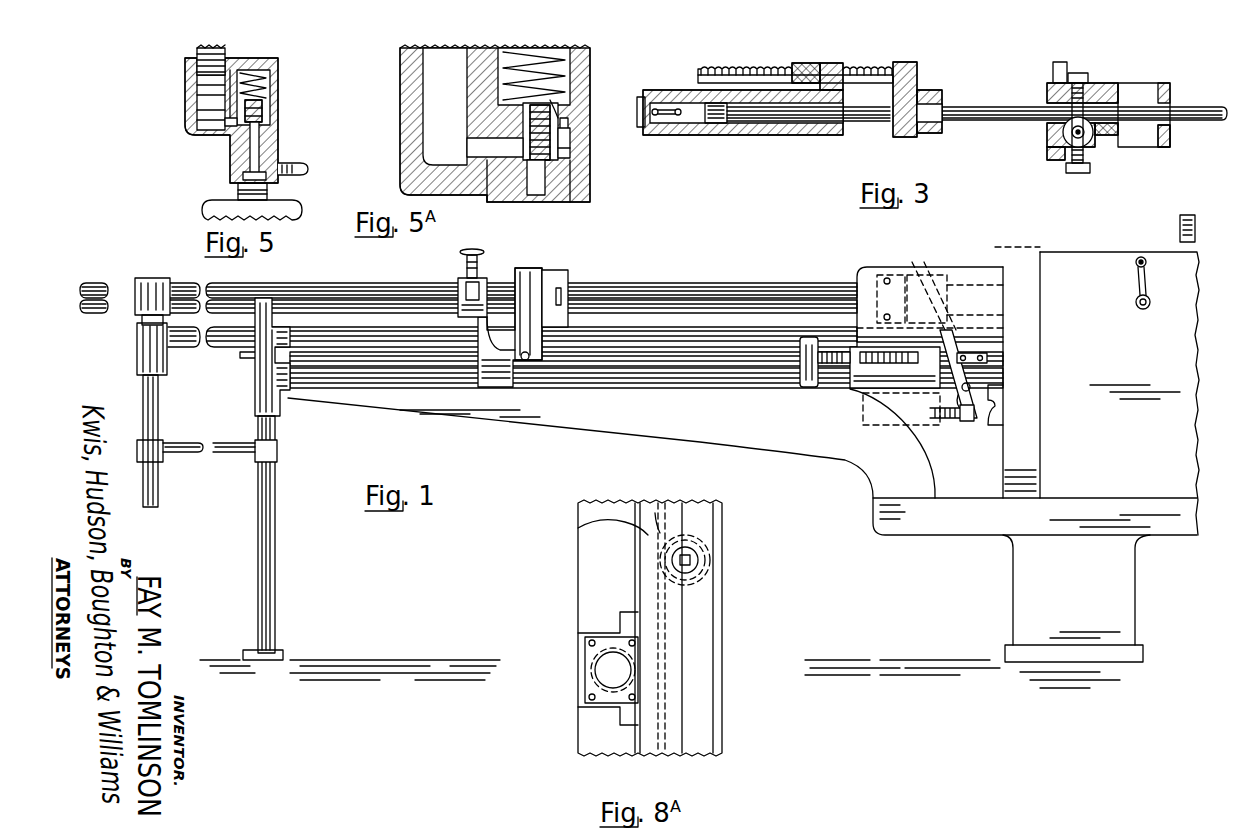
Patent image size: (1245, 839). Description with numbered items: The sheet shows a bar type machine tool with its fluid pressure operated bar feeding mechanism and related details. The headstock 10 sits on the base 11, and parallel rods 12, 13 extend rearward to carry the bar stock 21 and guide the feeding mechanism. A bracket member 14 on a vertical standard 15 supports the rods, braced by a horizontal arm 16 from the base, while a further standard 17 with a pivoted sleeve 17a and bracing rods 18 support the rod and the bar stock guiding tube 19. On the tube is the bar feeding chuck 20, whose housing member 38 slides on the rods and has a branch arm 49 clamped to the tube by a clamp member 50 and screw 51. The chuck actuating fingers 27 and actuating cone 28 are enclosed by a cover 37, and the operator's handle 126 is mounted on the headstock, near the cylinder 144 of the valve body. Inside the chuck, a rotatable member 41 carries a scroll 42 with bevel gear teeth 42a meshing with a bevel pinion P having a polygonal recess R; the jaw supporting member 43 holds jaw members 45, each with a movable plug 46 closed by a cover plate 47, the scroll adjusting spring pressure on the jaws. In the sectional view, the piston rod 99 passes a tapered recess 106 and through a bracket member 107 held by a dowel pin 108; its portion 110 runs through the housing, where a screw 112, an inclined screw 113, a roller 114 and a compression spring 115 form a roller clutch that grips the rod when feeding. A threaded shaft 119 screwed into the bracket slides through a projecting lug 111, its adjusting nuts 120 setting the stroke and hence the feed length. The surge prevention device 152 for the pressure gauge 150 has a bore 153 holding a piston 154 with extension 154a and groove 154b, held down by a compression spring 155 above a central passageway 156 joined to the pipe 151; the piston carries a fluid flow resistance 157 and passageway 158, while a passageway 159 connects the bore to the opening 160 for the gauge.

In FIG. 1, the headstock 10 is at (1197, 336).
In FIG. 1, the base 11 is at (1015, 598).
In FIG. 1, the rod 12 is at (636, 388).
In FIG. 1, the rod 13 is at (699, 336).
In FIG. 1, the bracket member 14 is at (274, 298).
In FIG. 1, the vertical standard 15 is at (276, 496).
In FIG. 1, the horizontal arm 16 is at (666, 435).
In FIG. 1, the vertical standard 17 is at (146, 416).
In FIG. 1, the pivoted sleeve 17a is at (160, 263).
In FIG. 1, the bracing rod 18 is at (237, 443).
In FIG. 1, the bar stock guiding tube 19 is at (418, 268).
In FIG. 1, the bar feeding chuck 20 is at (503, 272).
In FIG. 1, the bar stock 21 is at (752, 275).
In FIG. 1, the fingers 27 is at (905, 277).
In FIG. 1, the actuating cone 28 is at (935, 282).
In FIG. 1, the cover 37 is at (990, 268).
In FIG. 3, the housing member 38 is at (1118, 85).
In FIG. 1, the housing member 38 is at (566, 282).
In FIG. 1, the rotatable member 41 is at (545, 270).
In FIG. 8A, the scroll 42 is at (648, 518).
In FIG. 8A, the bevel gear teeth 42a is at (668, 638).
In FIG. 8A, the jaw supporting member 43 is at (580, 527).
In FIG. 8A, the jaw member 45 is at (586, 641).
In FIG. 8A, the movable plug 46 is at (612, 651).
In FIG. 8A, the cover plate 47 is at (590, 690).
In FIG. 1, the branch arm 49 is at (480, 328).
In FIG. 1, the clamp member 50 is at (469, 280).
In FIG. 1, the screw 51 is at (479, 254).
In FIG. 3, the piston rod 99 is at (873, 122).
In FIG. 1, the piston rod 99 is at (790, 360).
In FIG. 3, the tapered recess 106 is at (680, 118).
In FIG. 3, the bracket member 107 is at (915, 90).
In FIG. 3, the dowel pin 108 is at (932, 133).
In FIG. 3, the piston rod portion 110 is at (1012, 108).
In FIG. 3, the projecting lug 111 is at (856, 42).
In FIG. 3, the screw 112 is at (1084, 74).
In FIG. 3, the screw 113 is at (1076, 175).
In FIG. 3, the roller 114 is at (1090, 140).
In FIG. 3, the compression spring 115 is at (1120, 126).
In FIG. 3, the threaded shaft 119 is at (886, 68).
In FIG. 3, the adjusting nuts 120 is at (793, 62).
In FIG. 1, the handle 126 is at (1150, 284).
In FIG. 1, the cylinder 144 is at (1183, 228).
In FIG. 5, the pressure gauge 150 is at (212, 52).
In FIG. 5, the pipe 151 is at (285, 162).
In FIG. 5, the surge prevention device 152 is at (296, 98).
In FIG. 5, the bore 153 is at (236, 62).
In FIG. 5A, the bore 153 is at (572, 62).
In FIG. 5, the piston 154 is at (268, 112).
In FIG. 5A, the piston 154 is at (572, 130).
In FIG. 5, the extension 154a is at (266, 90).
In FIG. 5A, the extension 154a is at (522, 98).
In FIG. 5A, the groove 154b is at (570, 150).
In FIG. 5, the compression spring 155 is at (266, 70).
In FIG. 5A, the compression spring 155 is at (522, 37).
In FIG. 5, the central passageway 156 is at (243, 170).
In FIG. 5A, the central passageway 156 is at (534, 186).
In FIG. 5, the fluid flow resistance 157 is at (216, 140).
In FIG. 5A, the fluid flow resistance 157 is at (556, 102).
In FIG. 5A, the passageway 158 is at (566, 112).
In FIG. 5, the passageway 159 is at (228, 122).
In FIG. 5A, the passageway 159 is at (482, 146).
In FIG. 5, the opening 160 is at (200, 100).
In FIG. 5A, the opening 160 is at (456, 36).
In FIG. 8A, the bevel pinion P is at (691, 548).
In FIG. 8A, the polygonal recess R is at (688, 575).